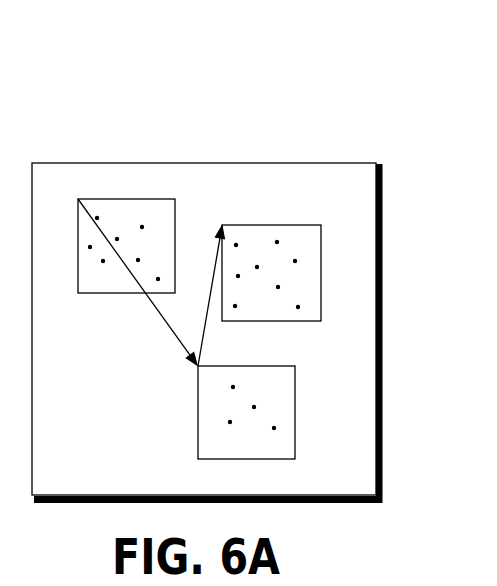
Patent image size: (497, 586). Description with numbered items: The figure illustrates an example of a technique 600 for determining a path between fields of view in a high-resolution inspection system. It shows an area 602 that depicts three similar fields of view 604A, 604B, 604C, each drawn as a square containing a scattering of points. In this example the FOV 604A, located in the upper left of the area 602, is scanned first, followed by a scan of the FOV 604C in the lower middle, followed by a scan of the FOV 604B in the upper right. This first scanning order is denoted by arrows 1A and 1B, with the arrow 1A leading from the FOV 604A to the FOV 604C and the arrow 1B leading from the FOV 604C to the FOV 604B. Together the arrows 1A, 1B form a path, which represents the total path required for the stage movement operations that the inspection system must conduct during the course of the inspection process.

The technique 600 is at (115, 80).
The area 602 is at (318, 165).
The field of view 604A is at (132, 199).
The field of view 604B is at (321, 268).
The field of view 604C is at (295, 400).
The arrow 1A is at (137, 282).
The arrow 1B is at (203, 296).